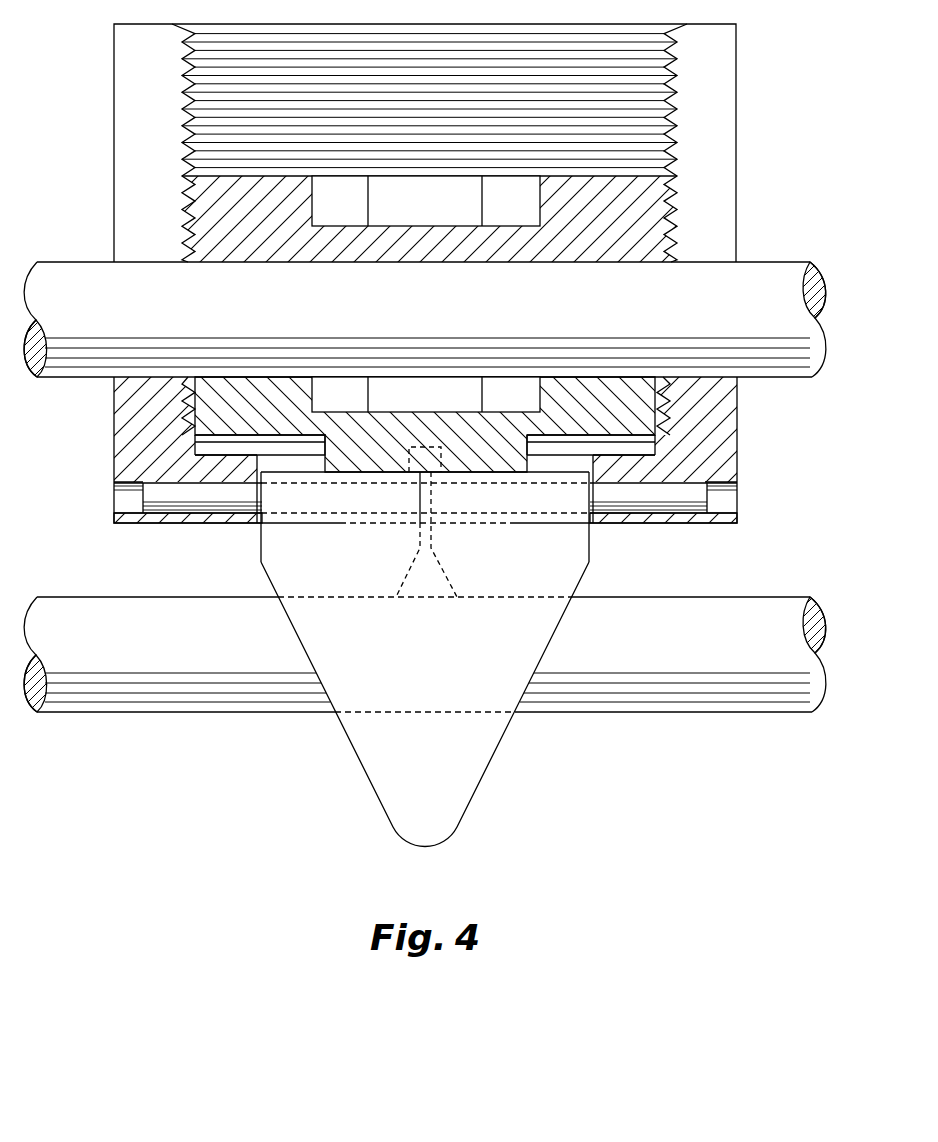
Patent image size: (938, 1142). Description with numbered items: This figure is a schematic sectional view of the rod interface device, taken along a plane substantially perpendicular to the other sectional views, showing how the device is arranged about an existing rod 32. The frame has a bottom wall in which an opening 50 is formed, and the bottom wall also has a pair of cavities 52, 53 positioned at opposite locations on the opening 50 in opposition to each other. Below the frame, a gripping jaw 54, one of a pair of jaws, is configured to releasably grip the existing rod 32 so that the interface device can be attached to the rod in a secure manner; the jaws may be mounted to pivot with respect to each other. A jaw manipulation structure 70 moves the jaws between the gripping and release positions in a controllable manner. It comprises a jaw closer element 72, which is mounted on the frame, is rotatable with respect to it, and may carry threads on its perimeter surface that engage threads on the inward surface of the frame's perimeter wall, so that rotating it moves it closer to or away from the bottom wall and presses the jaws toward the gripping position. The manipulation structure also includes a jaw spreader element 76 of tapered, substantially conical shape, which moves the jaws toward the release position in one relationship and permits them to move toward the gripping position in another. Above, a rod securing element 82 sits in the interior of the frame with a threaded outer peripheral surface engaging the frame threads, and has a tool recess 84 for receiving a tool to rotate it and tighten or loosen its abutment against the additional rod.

The existing rod 32 is at (708, 607).
The opening 50 is at (432, 487).
The cavity 52 is at (128, 500).
The cavity 53 is at (720, 497).
The gripping jaw 54 is at (445, 757).
The jaw manipulation structure 70 is at (633, 408).
The jaw closer element 72 is at (213, 417).
The jaw spreader element 76 is at (420, 568).
The rod securing element 82 is at (615, 240).
The tool recess 84 is at (512, 208).